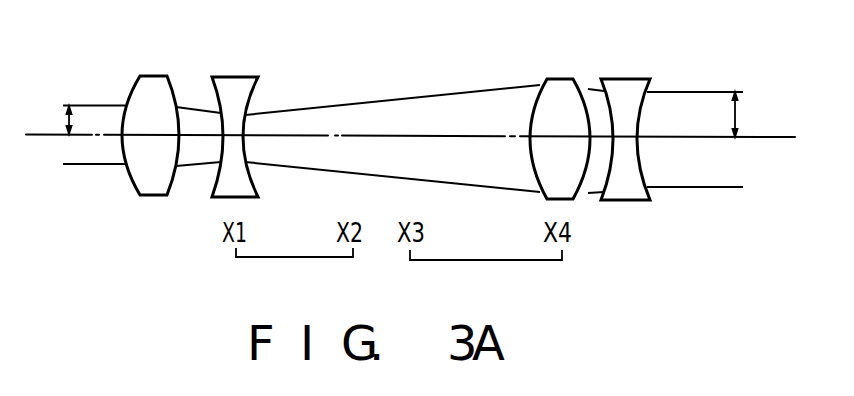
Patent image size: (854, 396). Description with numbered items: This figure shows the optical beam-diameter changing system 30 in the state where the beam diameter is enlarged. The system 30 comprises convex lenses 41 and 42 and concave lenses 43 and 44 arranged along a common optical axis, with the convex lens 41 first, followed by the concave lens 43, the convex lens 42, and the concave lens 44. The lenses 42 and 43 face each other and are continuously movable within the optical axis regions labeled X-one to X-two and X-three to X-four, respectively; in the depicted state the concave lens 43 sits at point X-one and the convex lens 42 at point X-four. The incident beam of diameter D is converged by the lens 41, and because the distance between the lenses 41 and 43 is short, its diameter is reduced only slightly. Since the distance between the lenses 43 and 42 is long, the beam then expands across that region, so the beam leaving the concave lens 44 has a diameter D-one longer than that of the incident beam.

The optical beam-diameter changing system 30 is at (421, 36).
The convex lens 41 is at (147, 84).
The convex lens 42 is at (560, 87).
The concave lens 43 is at (235, 85).
The concave lens 44 is at (628, 87).